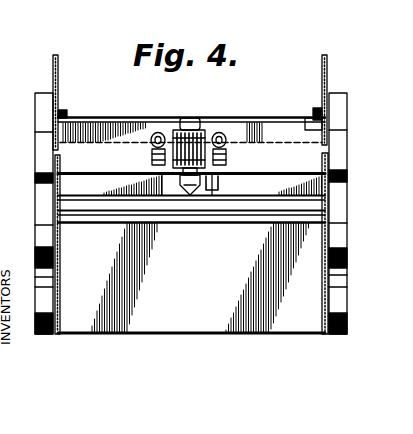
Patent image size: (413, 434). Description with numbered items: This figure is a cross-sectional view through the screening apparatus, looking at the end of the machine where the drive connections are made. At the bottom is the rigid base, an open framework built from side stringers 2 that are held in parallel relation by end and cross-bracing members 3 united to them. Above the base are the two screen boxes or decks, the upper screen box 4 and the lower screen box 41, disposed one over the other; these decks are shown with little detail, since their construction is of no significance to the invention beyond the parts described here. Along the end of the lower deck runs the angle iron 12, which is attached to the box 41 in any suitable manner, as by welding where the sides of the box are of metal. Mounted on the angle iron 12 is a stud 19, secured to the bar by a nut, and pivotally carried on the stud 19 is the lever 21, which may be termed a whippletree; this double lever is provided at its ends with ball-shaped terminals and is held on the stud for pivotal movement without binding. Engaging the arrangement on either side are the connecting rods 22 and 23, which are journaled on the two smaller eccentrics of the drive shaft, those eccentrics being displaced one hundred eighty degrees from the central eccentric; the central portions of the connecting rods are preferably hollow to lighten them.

The side stringers 2 is at (58, 323).
The end and cross-bracing members 3 is at (197, 322).
The screen box 4 is at (331, 104).
The screen box 41 is at (326, 167).
The angle iron 12 is at (326, 194).
The stud 19 is at (186, 197).
The lever 21 is at (211, 175).
The connecting rod 22 is at (230, 157).
The connecting rod 23 is at (147, 142).